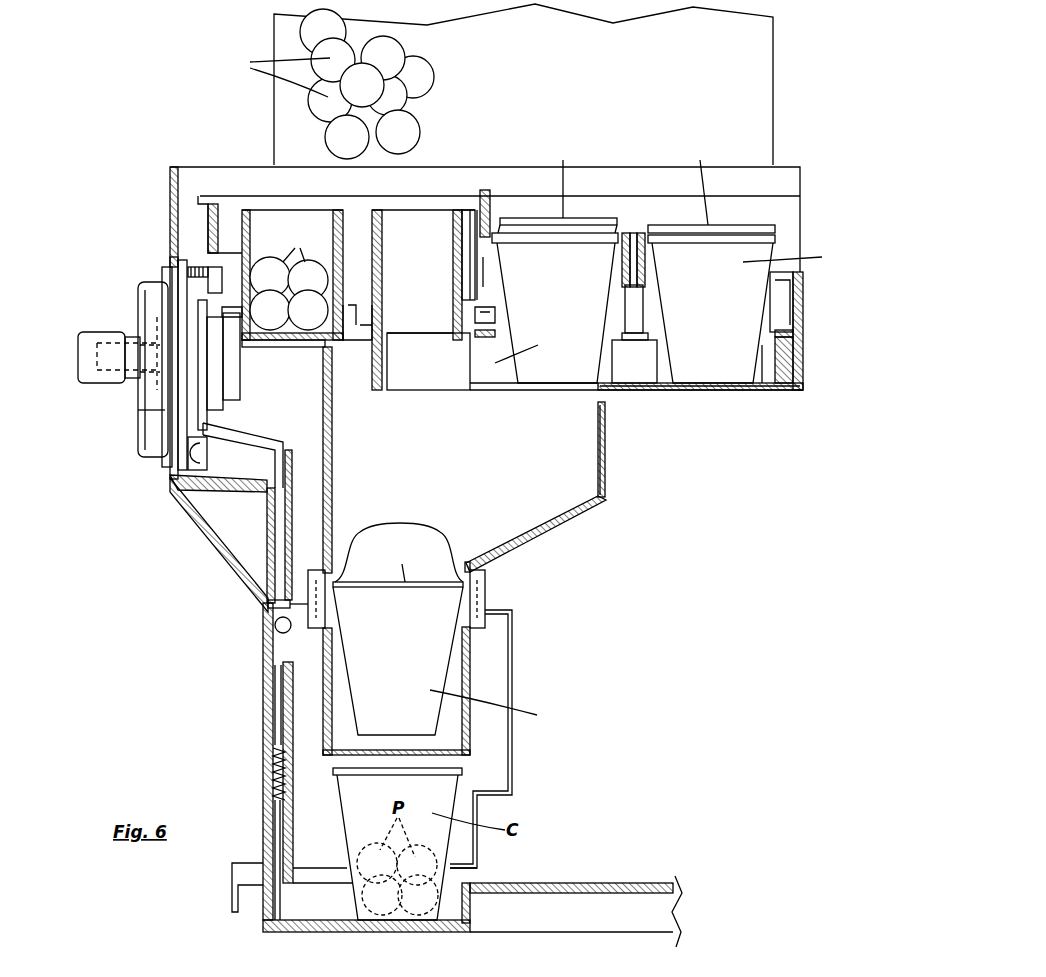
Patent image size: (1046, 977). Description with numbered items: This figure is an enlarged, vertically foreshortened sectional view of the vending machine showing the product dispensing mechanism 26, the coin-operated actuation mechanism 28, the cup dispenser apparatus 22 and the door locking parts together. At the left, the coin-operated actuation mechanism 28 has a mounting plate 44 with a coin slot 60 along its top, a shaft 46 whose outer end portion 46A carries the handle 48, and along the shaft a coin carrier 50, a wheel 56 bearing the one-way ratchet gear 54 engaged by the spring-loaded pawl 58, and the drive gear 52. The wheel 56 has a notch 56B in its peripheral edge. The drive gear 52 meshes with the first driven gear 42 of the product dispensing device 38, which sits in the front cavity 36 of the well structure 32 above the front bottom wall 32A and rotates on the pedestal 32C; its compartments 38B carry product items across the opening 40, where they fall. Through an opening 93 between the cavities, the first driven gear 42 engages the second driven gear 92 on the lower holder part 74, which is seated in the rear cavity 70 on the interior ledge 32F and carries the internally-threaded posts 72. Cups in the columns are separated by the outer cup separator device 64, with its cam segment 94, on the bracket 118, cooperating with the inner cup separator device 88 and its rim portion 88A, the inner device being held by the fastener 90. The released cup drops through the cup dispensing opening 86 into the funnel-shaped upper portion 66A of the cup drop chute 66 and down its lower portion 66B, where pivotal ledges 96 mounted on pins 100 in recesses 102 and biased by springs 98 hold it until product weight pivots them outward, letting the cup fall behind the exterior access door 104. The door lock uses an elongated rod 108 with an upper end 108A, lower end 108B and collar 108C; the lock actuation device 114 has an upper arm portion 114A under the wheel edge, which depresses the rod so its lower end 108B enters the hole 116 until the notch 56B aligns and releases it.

The cup dispenser apparatus 22 is at (742, 115).
The product dispensing mechanism 26 is at (250, 203).
The coin-operated actuation mechanism 28 is at (137, 410).
The well structure 32 is at (810, 383).
The front bottom wall 32A is at (288, 342).
The pedestal 32C is at (350, 317).
The interior ledge 32F is at (803, 350).
The front cavity 36 is at (197, 237).
The product dispensing device 38 is at (313, 205).
The compartment 38B is at (245, 133).
The opening 40 is at (423, 360).
The first driven gear 42 is at (490, 313).
The mounting plate 44 is at (175, 467).
The shaft 46 is at (135, 330).
The outer end portion 46A is at (93, 357).
The handle 48 is at (100, 340).
The coin carrier 50 is at (150, 293).
The drive gear 52 is at (237, 367).
The one-way ratchet gear 54 is at (210, 373).
The wheel 56 is at (237, 415).
The notch 56B is at (200, 427).
The spring-loaded pawl 58 is at (205, 275).
The coin slot 60 is at (150, 283).
The outer cup separator device 64 is at (478, 193).
The cup drop chute 66 is at (590, 512).
The funnel-shaped upper portion 66A is at (605, 495).
The lower portion 66B is at (470, 672).
The rear cavity 70 is at (763, 372).
The internally-threaded posts 72 is at (638, 300).
The lower holder part 74 is at (778, 288).
The cup dispensing opening 86 is at (567, 392).
The inner cup separator device 88 is at (637, 258).
The rim portion 88A is at (630, 233).
The fastener 90 is at (633, 263).
The second driven gear 92 is at (783, 323).
The opening 93 is at (483, 272).
The cam segment 94 is at (510, 200).
The pivotal ledges 96 is at (465, 597).
The springs 98 is at (470, 603).
The pins 100 is at (370, 532).
The recesses 102 is at (453, 620).
The exterior access door 104 is at (263, 757).
The elongated rod 108 is at (280, 683).
The upper end 108A is at (278, 630).
The lower end 108B is at (273, 917).
The collar 108C is at (278, 728).
The lock actuation device 114 is at (280, 563).
The upper arm portion 114A is at (253, 442).
The hole 116 is at (273, 927).
The bracket 118 is at (490, 190).